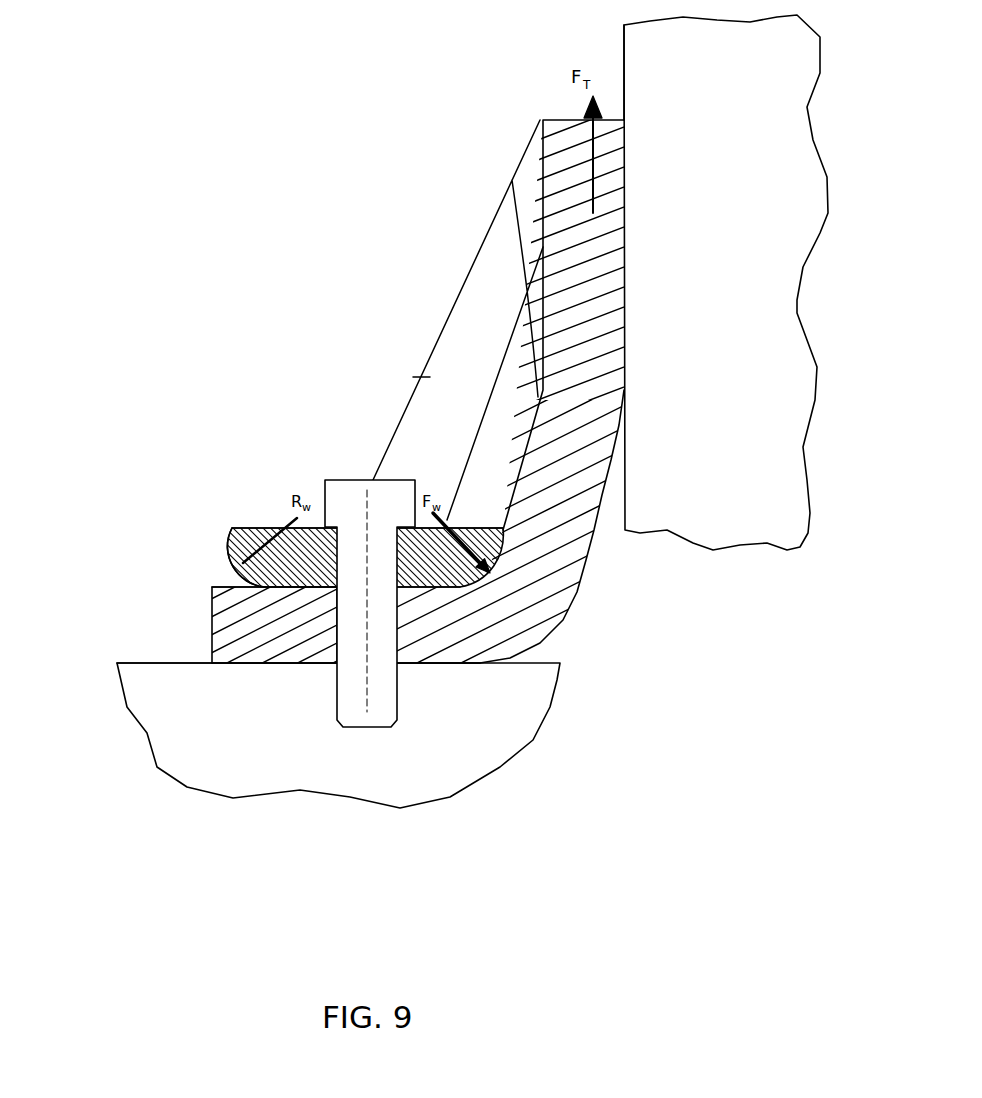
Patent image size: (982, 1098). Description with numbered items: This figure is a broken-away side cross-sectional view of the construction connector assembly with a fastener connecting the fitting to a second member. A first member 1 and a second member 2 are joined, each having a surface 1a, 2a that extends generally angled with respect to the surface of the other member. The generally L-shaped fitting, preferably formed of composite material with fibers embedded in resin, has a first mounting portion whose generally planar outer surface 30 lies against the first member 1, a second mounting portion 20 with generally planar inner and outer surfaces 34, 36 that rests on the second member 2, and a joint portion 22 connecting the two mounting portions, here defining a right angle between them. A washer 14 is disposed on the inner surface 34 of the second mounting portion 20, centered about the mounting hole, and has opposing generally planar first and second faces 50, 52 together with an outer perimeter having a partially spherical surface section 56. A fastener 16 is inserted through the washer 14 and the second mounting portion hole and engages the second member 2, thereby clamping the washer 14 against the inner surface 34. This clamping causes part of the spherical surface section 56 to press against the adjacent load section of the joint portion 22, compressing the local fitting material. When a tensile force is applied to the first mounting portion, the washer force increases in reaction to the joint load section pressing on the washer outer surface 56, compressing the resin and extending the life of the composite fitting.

The first member 1 is at (788, 246).
The surface of first member 1a is at (624, 42).
The second member 2 is at (156, 746).
The surface of second member 2a is at (142, 663).
The washer 14 is at (200, 529).
The fastener 16 is at (346, 461).
The second mounting portion 20 is at (229, 677).
The joint portion 22 is at (442, 354).
The outer surface of first mounting portion 30 is at (625, 253).
The inner surface of second mounting portion 34 is at (233, 587).
The outer surface of second mounting portion 36 is at (433, 667).
The first face of washer 50 is at (267, 528).
The second face of washer 52 is at (278, 590).
The spherical surface section 56 is at (230, 548).